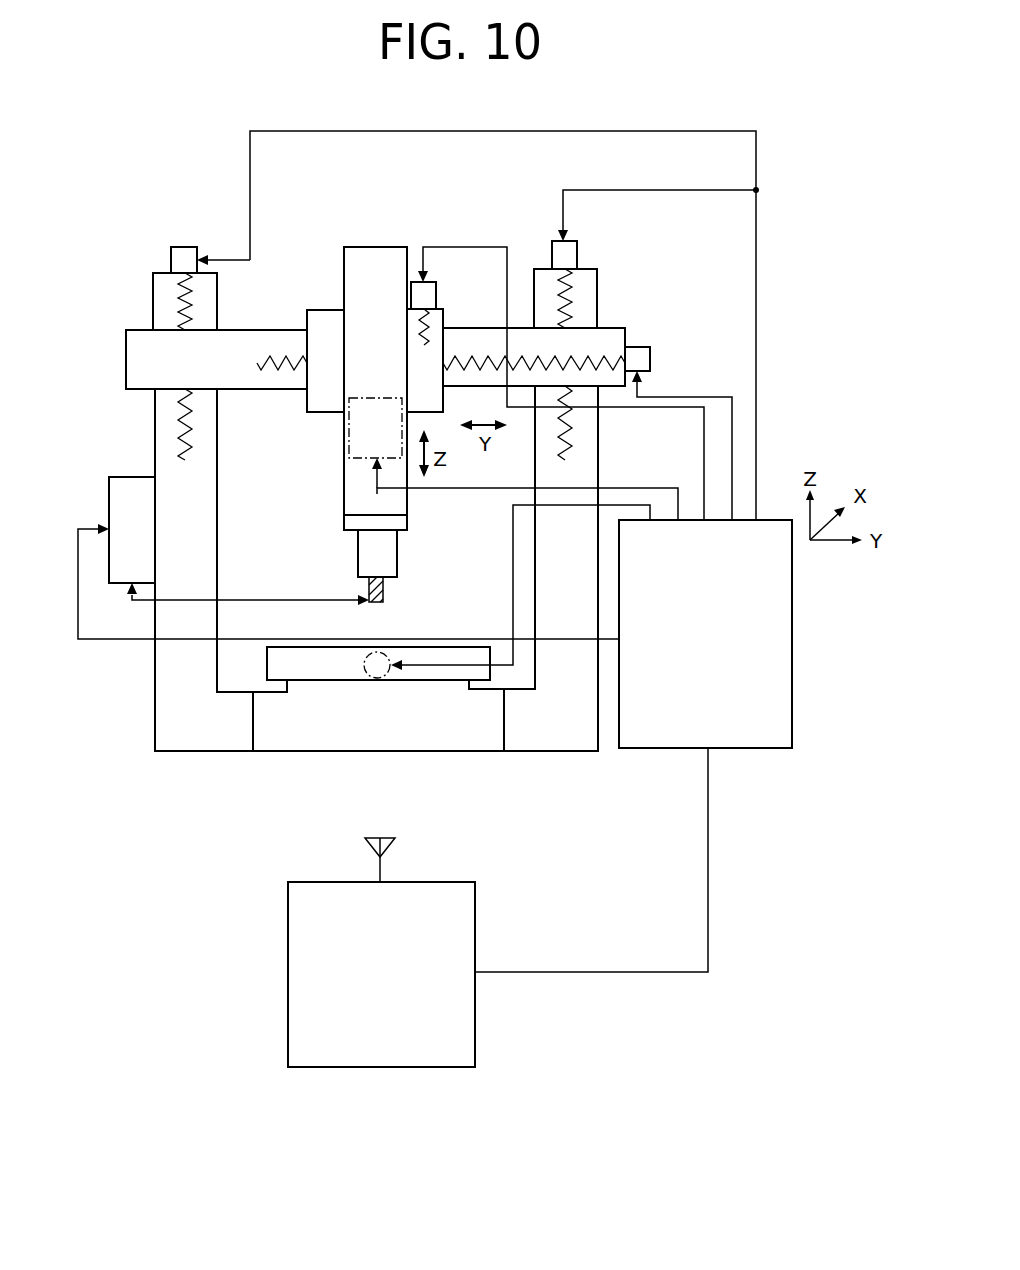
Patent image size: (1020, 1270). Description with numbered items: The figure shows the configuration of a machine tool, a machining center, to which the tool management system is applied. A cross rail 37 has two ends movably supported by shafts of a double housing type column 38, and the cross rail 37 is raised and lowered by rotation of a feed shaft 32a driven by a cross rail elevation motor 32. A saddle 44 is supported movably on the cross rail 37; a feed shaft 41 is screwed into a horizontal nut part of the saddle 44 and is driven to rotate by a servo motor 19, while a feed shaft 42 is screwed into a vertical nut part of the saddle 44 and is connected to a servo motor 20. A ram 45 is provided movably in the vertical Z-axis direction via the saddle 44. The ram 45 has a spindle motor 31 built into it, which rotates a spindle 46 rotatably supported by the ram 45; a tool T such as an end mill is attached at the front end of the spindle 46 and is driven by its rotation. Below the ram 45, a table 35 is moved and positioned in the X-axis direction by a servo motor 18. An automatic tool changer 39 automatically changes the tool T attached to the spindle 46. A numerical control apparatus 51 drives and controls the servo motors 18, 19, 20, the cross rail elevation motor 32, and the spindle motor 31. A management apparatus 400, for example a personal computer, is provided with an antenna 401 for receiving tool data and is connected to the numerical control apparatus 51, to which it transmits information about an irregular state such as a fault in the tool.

The servo motor 18 is at (369, 677).
The servo motor 19 is at (650, 357).
The servo motor 20 is at (441, 287).
The spindle motor 31 is at (349, 440).
The cross rail elevation motor 32 is at (177, 245).
The feed shaft 32a is at (176, 296).
The table 35 is at (435, 668).
The cross rail 37 is at (126, 342).
The double housing type column 38 is at (155, 418).
The automatic tool changer (ATC) 39 is at (120, 477).
The feed shaft 41 is at (598, 356).
The feed shaft 42 is at (443, 324).
The saddle 44 is at (320, 310).
The ram 45 is at (344, 507).
The spindle 46 is at (390, 552).
The tool T is at (388, 583).
The numerical control apparatus 51 is at (738, 750).
The management apparatus 400 is at (422, 1067).
The antenna 401 is at (365, 842).